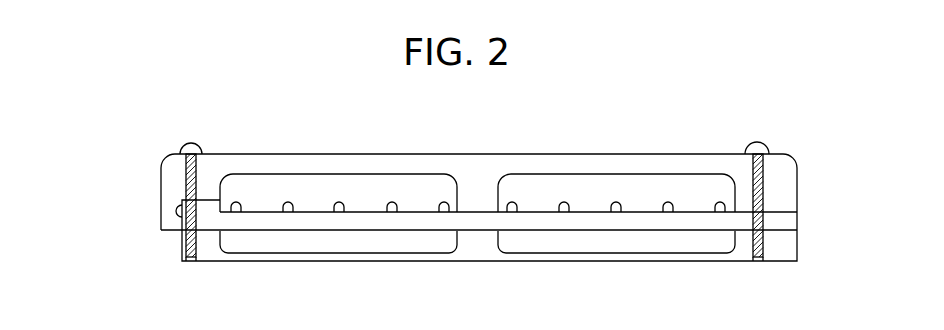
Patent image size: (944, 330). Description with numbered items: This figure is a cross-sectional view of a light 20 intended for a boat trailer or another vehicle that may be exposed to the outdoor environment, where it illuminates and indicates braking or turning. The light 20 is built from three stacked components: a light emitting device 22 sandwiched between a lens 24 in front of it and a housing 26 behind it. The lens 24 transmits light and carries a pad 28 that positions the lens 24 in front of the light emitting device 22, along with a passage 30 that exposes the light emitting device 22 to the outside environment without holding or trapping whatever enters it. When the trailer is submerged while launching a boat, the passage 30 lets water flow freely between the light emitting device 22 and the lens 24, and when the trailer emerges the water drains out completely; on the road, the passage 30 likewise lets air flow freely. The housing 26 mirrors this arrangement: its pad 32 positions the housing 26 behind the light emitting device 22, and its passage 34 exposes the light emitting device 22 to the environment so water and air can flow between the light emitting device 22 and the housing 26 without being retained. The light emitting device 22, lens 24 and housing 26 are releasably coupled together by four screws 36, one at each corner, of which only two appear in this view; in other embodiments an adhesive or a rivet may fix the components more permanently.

The light 20 is at (134, 134).
The light emitting device 22 is at (600, 222).
The lens 24 is at (597, 154).
The housing 26 is at (402, 262).
The pad 28 is at (207, 198).
The passage 30 is at (303, 187).
The pad 32 is at (204, 232).
The passage 34 is at (256, 247).
The screws 36 is at (200, 150).